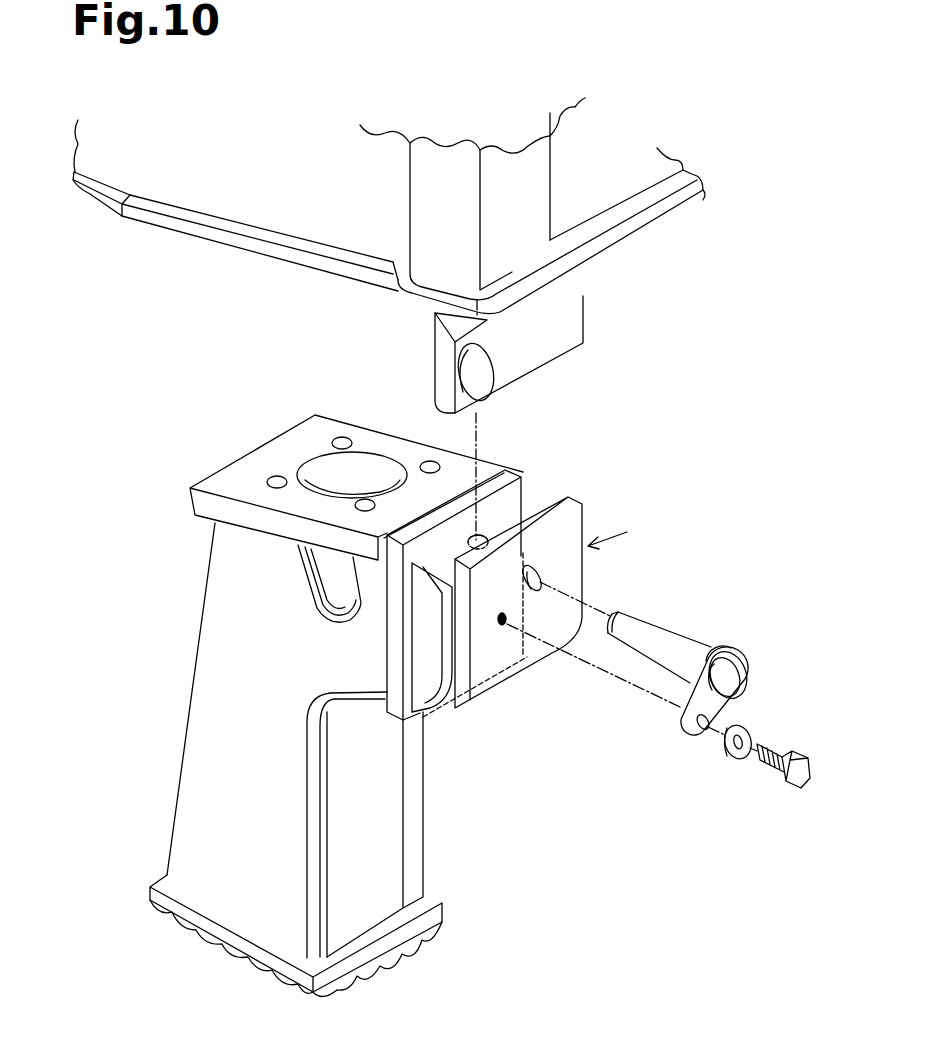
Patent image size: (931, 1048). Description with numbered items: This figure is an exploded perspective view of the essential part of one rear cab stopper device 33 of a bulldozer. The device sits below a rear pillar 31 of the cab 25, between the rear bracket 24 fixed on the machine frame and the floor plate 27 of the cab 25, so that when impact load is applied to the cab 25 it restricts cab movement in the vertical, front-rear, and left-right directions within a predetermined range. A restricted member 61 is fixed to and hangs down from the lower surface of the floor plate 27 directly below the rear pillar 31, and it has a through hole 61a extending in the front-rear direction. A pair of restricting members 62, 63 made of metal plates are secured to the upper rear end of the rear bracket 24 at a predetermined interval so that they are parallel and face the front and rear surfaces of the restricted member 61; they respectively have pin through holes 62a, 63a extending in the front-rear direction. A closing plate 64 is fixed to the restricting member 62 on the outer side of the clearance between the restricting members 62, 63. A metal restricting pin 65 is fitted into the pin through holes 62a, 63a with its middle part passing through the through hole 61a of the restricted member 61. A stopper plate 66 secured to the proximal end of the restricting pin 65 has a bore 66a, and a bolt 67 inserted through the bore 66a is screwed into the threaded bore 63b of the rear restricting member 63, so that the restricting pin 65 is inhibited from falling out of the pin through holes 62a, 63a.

The rear bracket 24 is at (183, 790).
The cab 25 is at (86, 202).
The floor plate 27 is at (165, 230).
The rear pillar 31 is at (419, 203).
The rear cab stopper device 33 is at (628, 531).
The restricted member 61 is at (532, 355).
The through hole 61a is at (487, 378).
The restricting member 62 is at (452, 614).
The pin through hole 62a is at (481, 537).
The restricting member 63 is at (549, 618).
The pin through hole 63a is at (540, 574).
The threaded bore 63b is at (506, 622).
The closing plate 64 is at (400, 695).
The restricting pin 65 is at (680, 640).
The stopper plate 66 is at (735, 721).
The bore 66a is at (707, 730).
The bolt 67 is at (797, 782).